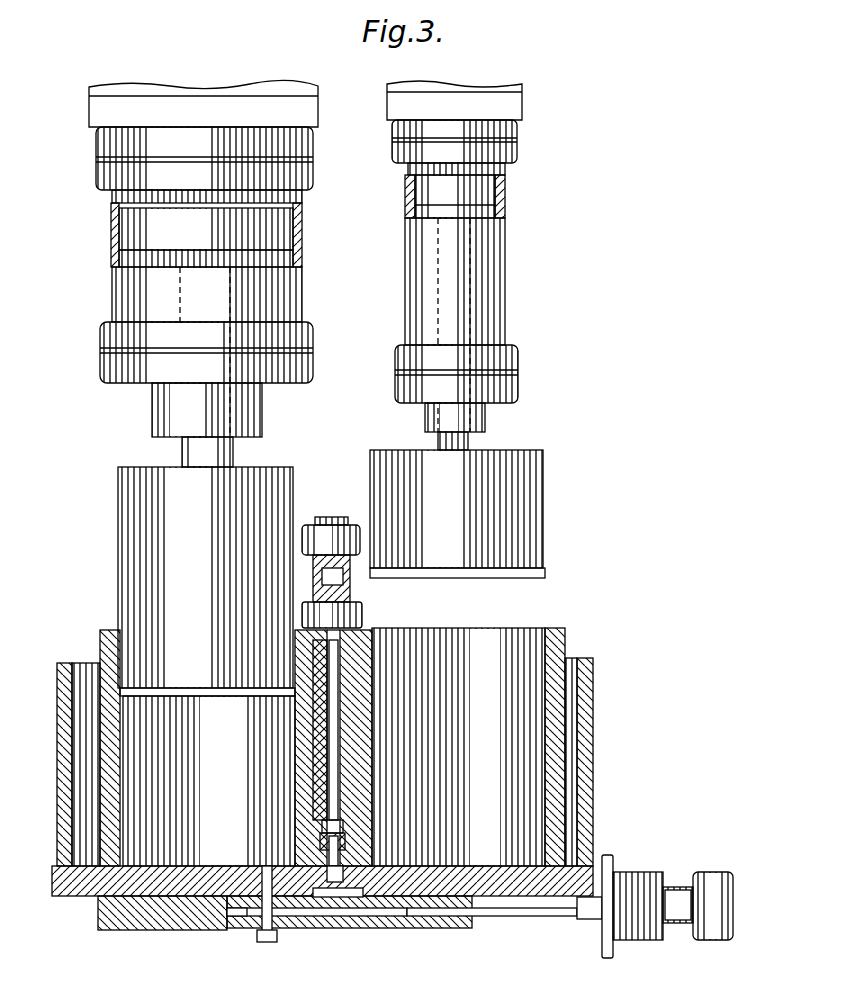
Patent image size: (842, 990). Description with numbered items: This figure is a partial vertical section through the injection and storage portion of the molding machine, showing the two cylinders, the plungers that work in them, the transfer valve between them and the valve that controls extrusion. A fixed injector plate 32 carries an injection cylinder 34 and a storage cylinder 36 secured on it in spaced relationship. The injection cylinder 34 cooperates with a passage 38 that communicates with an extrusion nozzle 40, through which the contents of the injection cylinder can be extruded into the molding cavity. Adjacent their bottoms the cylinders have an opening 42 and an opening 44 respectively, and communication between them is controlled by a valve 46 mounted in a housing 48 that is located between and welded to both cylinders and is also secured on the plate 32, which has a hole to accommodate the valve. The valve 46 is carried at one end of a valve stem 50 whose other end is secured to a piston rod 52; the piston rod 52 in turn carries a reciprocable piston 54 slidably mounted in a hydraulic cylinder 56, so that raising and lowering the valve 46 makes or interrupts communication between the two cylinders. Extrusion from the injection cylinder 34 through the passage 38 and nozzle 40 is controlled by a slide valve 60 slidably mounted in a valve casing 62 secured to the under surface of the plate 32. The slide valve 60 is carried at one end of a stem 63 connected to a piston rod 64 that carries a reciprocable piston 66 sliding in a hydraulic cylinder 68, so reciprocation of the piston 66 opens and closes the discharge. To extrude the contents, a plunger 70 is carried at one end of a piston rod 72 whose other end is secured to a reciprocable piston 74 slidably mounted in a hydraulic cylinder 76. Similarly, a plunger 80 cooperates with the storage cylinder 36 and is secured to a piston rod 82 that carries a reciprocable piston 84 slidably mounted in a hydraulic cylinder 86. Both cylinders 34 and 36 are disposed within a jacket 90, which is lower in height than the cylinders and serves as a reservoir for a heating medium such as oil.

The plate 32 is at (52, 882).
The injection cylinder 34 is at (104, 648).
The storage cylinder 36 is at (560, 646).
The passage 38 is at (255, 890).
The extrusion nozzle 40 is at (262, 938).
The opening 42 is at (305, 846).
The opening 44 is at (362, 898).
The valve 46 is at (305, 828).
The housing 48 is at (320, 708).
The valve stem 50 is at (333, 735).
The piston rod 52 is at (363, 645).
The reciprocable piston 54 is at (348, 578).
The hydraulic cylinder 56 is at (326, 548).
The slide valve 60 is at (292, 916).
The valve casing 62 is at (390, 918).
The stem 63 is at (500, 918).
The piston rod 64 is at (595, 918).
The reciprocable piston 66 is at (680, 925).
The hydraulic cylinder 68 is at (676, 890).
The plunger 70 is at (122, 555).
The piston rod 72 is at (185, 452).
The reciprocable piston 74 is at (135, 231).
The hydraulic cylinder 76 is at (125, 296).
The plunger 80 is at (540, 528).
The piston rod 82 is at (470, 446).
The reciprocable piston 84 is at (498, 191).
The hydraulic cylinder 86 is at (505, 289).
The jacket 90 is at (63, 719).